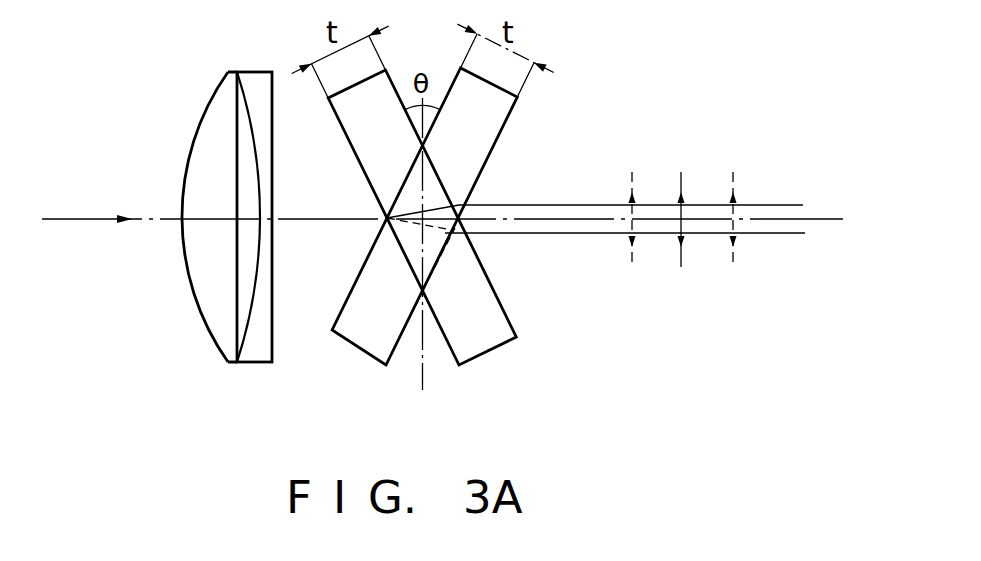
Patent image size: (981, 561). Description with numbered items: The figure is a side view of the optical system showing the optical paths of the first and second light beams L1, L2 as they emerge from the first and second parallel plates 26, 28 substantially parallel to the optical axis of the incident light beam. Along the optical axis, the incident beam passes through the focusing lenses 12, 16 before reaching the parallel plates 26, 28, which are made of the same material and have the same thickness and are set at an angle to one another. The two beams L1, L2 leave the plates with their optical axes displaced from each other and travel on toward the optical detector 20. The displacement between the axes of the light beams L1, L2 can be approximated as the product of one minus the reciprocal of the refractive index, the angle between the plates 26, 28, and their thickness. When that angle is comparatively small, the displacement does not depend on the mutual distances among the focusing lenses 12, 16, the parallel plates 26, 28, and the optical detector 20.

The focusing lens 12 is at (216, 104).
The focusing lens 16 is at (250, 72).
The optical detector 20 is at (681, 182).
The first parallel plate 26 is at (492, 122).
The second parallel plate 28 is at (492, 297).
The first light beam L1 is at (773, 203).
The second light beam L2 is at (773, 237).